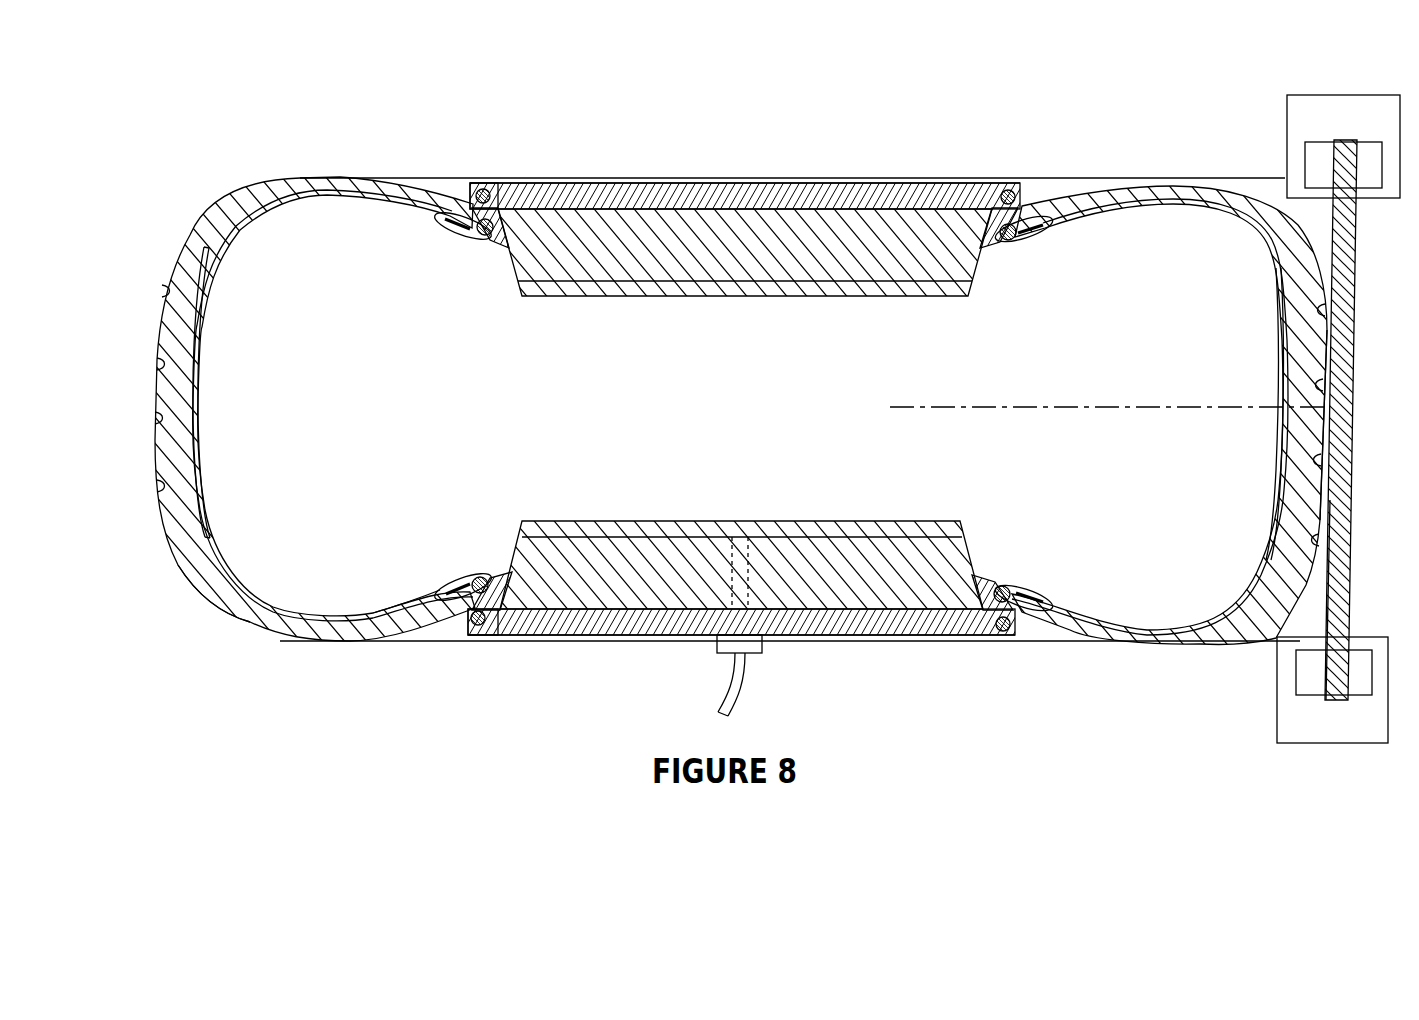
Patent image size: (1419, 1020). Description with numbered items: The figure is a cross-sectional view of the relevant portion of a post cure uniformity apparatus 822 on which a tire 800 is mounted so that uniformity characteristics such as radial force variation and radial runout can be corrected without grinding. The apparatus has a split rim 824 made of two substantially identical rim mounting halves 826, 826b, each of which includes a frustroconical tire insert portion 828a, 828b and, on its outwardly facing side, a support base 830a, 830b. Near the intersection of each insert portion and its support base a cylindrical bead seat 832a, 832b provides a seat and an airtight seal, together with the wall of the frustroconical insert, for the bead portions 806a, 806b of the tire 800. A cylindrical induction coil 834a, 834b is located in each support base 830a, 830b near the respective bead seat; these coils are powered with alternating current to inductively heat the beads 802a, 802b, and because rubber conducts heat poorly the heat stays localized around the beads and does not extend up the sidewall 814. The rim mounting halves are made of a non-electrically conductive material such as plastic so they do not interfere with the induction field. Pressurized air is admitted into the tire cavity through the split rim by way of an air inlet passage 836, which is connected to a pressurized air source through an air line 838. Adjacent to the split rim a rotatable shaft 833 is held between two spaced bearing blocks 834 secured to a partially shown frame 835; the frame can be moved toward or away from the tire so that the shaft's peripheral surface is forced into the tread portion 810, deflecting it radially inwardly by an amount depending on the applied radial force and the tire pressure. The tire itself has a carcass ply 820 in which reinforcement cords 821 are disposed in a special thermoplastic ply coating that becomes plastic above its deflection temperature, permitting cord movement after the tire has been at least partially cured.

The tire 800 is at (1171, 684).
The tread portion 810 is at (1316, 545).
The sidewall 814 is at (355, 178).
The carcass ply 820 is at (265, 620).
The reinforcement cords 821 is at (400, 610).
The post cure uniformity apparatus 822 is at (699, 206).
The split rim 824 is at (733, 592).
The rim mounting half 826 is at (710, 190).
The rim mounting half 826b is at (635, 622).
The frustroconical tire insert portion 828a is at (582, 256).
The frustroconical tire insert portion 828b is at (892, 568).
The support base 830a is at (582, 195).
The support base 830b is at (900, 625).
The cylindrical bead seat 832a is at (484, 189).
The cylindrical bead seat 832b is at (500, 628).
The cylindrical induction coil 834a is at (480, 188).
The cylindrical induction coil 834b is at (478, 620).
The bearing blocks 834 is at (1372, 155).
The frame 835 is at (1305, 118).
The air inlet passage 836 is at (1357, 320).
The rotatable shaft 833 is at (1350, 625).
The air line 838 is at (740, 690).
The bead 802a is at (480, 238).
The bead 802b is at (480, 576).
The bead portion 806a is at (462, 238).
The bead portion 806b is at (466, 582).